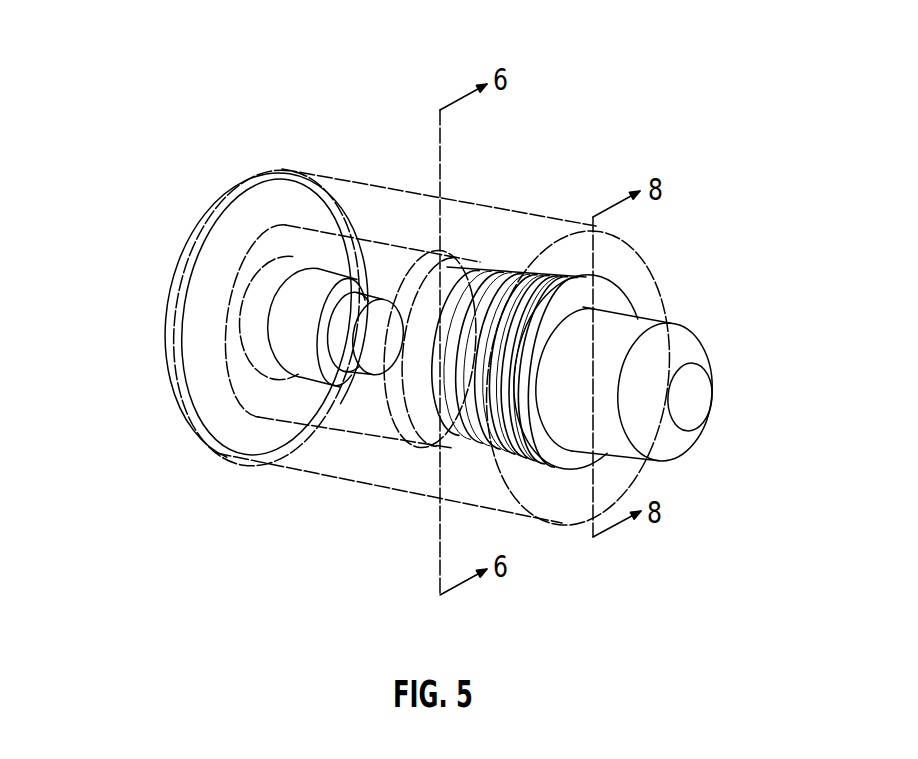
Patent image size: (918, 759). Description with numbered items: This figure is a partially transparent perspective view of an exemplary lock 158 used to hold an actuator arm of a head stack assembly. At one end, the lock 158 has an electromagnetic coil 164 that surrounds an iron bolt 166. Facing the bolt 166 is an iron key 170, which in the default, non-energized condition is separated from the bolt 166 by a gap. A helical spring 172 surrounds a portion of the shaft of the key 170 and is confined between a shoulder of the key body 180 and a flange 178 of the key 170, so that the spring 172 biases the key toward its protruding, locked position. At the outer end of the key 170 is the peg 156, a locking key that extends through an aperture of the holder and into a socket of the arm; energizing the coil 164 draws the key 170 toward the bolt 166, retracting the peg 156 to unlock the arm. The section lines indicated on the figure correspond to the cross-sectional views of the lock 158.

The lock 158 is at (232, 110).
The electromagnetic coil 164 is at (330, 283).
The iron bolt 166 is at (370, 293).
The key body 180 is at (478, 192).
The helical spring 172 is at (498, 268).
The iron key 170 is at (578, 430).
The flange 178 is at (610, 296).
The peg 156 is at (637, 325).